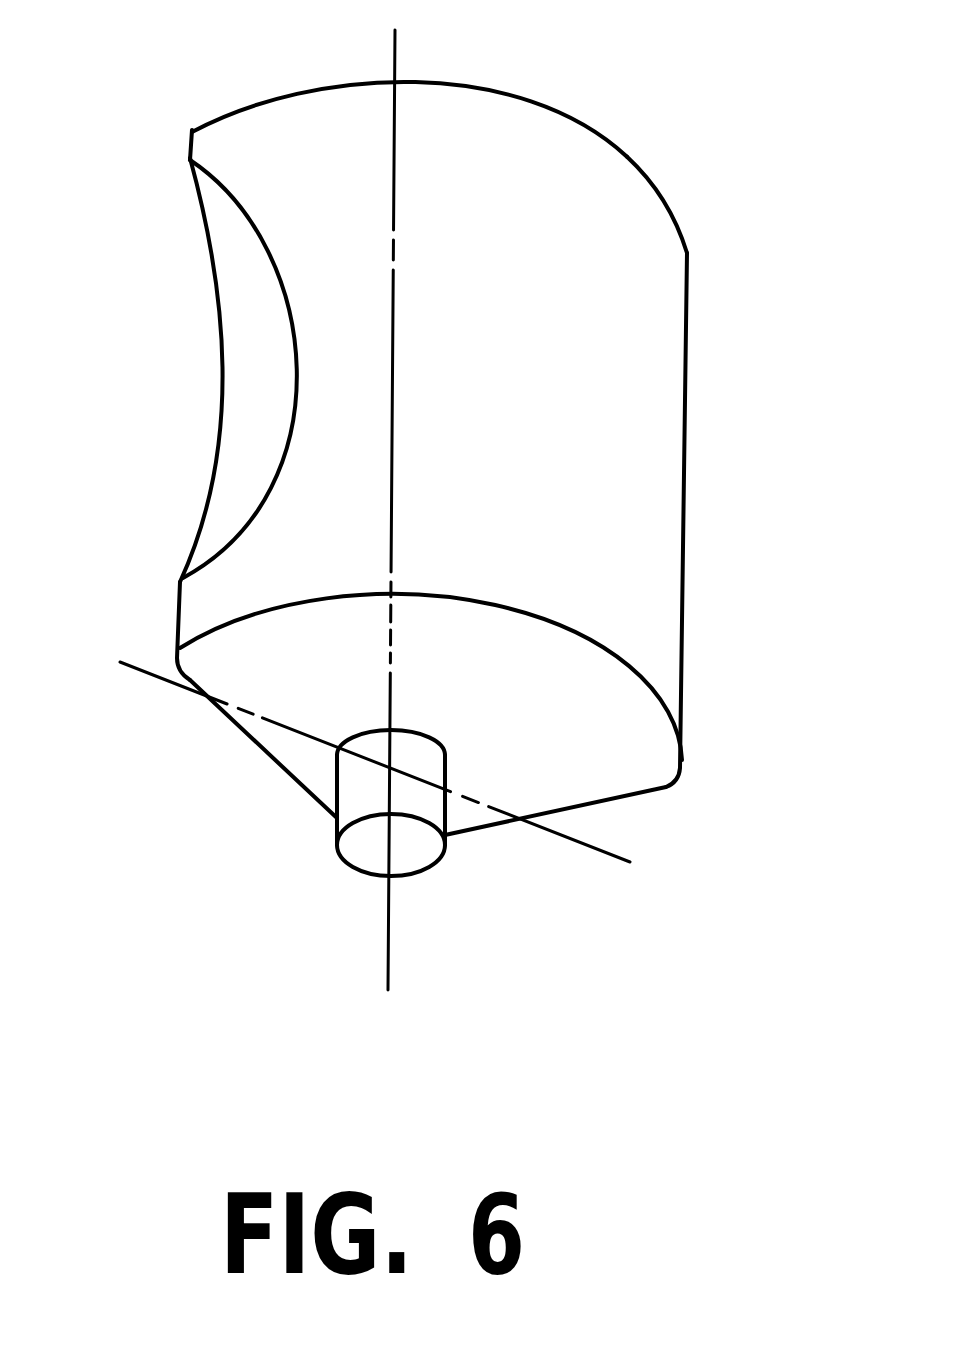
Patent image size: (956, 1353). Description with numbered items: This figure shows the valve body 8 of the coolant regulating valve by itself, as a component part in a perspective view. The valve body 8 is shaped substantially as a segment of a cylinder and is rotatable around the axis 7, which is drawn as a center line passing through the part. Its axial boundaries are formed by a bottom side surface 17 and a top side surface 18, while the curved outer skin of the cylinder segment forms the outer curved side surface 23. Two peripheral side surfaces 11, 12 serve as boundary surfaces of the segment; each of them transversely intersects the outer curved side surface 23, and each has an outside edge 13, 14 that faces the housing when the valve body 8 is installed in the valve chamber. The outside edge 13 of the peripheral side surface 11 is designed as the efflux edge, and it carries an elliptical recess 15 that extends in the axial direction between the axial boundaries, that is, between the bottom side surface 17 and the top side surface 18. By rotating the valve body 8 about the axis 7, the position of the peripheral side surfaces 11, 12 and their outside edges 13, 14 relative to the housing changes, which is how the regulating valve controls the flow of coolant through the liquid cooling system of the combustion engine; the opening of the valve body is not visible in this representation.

The axis 7 is at (388, 942).
The valve body 8 is at (645, 412).
The peripheral side surface 11 is at (253, 803).
The peripheral side surface 12 is at (587, 800).
The outside edge 13 is at (190, 158).
The outside edge 14 is at (682, 527).
The elliptical recess 15 is at (252, 345).
The bottom side surface 17 is at (590, 748).
The top side surface 18 is at (519, 98).
The outer curved side surface 23 is at (603, 253).